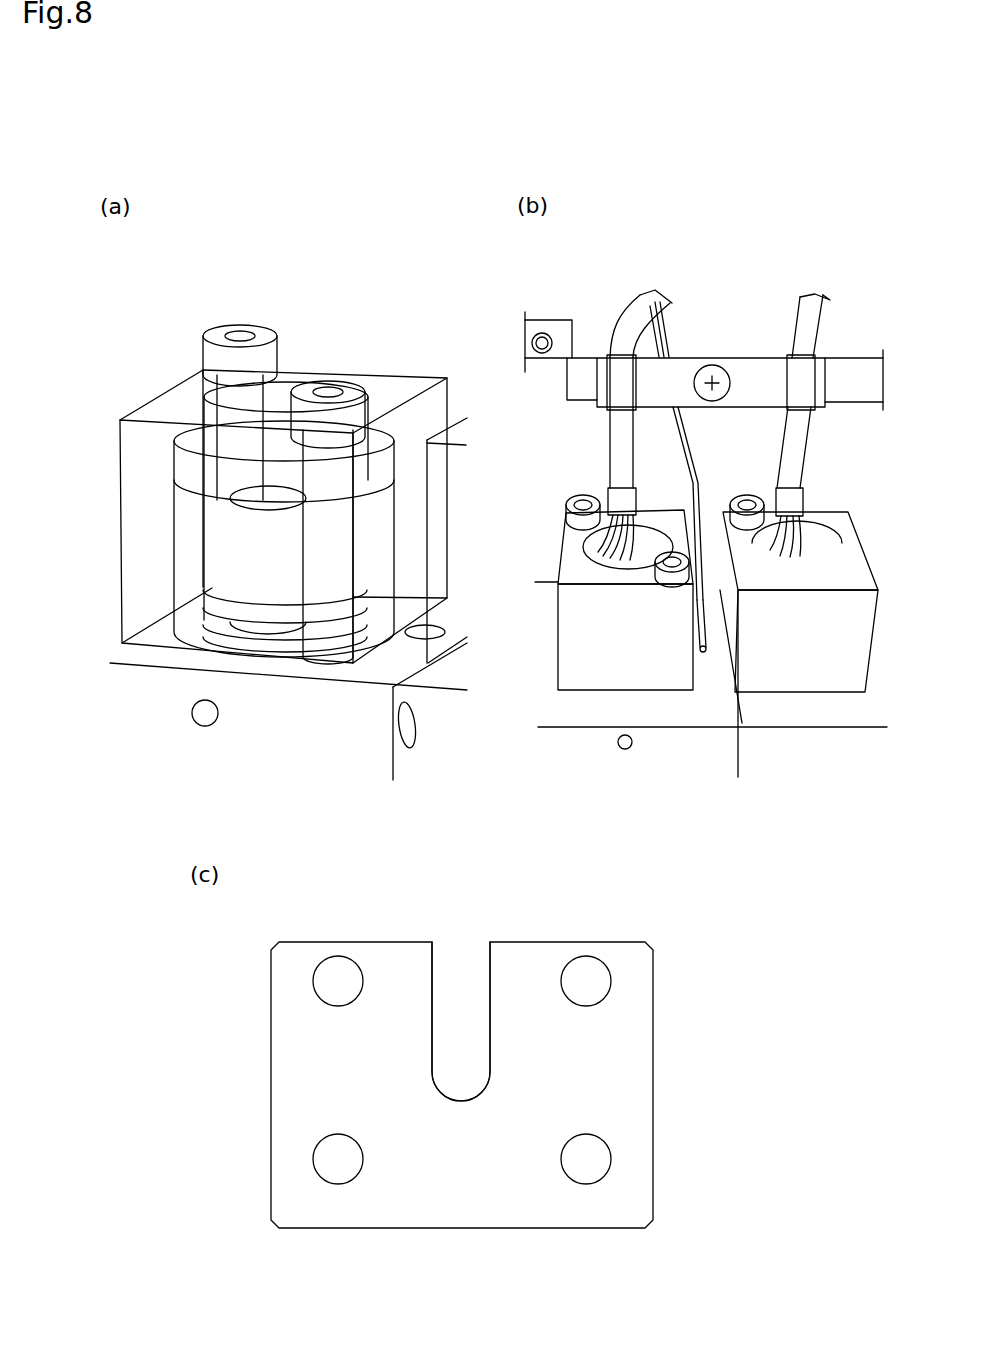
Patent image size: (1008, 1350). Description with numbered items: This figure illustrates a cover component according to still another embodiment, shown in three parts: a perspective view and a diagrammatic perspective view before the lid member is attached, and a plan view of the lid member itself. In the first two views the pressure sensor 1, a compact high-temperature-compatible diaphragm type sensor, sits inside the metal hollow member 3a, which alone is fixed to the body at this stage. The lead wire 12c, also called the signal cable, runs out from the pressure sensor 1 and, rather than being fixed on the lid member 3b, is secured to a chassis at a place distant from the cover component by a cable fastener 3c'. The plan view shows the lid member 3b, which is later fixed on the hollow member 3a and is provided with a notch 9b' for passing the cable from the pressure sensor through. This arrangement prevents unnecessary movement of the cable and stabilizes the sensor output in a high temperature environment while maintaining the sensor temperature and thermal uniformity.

The pressure sensor 1 is at (232, 565).
The metal hollow member 3a is at (380, 377).
The lid member 3b is at (602, 1077).
The cable fastener 3c' is at (704, 346).
The lead wire 12c is at (798, 447).
The notch 9b' is at (445, 997).